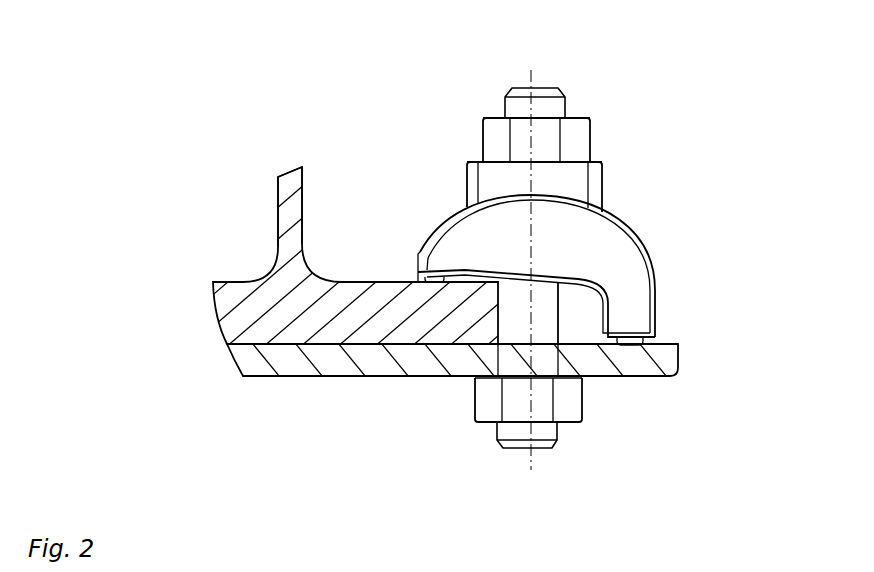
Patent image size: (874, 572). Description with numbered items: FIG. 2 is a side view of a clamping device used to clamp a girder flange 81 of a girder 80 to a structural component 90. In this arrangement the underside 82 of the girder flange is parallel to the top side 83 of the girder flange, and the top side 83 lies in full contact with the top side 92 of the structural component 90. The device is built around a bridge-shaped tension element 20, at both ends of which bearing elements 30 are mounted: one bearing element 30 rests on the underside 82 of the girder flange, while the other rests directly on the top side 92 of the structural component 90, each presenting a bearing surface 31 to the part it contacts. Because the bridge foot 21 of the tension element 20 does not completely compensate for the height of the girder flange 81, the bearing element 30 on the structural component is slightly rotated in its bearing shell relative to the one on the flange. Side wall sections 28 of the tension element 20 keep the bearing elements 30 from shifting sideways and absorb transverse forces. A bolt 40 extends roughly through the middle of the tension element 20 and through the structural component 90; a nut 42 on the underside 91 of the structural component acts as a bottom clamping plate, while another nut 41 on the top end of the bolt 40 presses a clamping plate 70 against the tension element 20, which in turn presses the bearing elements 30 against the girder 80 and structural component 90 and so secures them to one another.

The tension element 20 is at (613, 252).
The foot section 21 is at (608, 312).
The side wall section 28 is at (630, 328).
The bearing element 30 is at (425, 250).
The bearing surface 31 is at (441, 272).
The bolt 40 is at (557, 107).
The nut 41 is at (578, 145).
The nut 42 is at (568, 408).
The clamping plate 70 is at (588, 185).
The girder 80 is at (268, 267).
The girder flange 81 is at (355, 300).
The underside of the girder flange 82 is at (400, 282).
The top side of the girder flange 83 is at (372, 342).
The structural component 90 is at (255, 359).
The underside of the structural component 91 is at (375, 378).
The top side of the structural component 92 is at (300, 346).